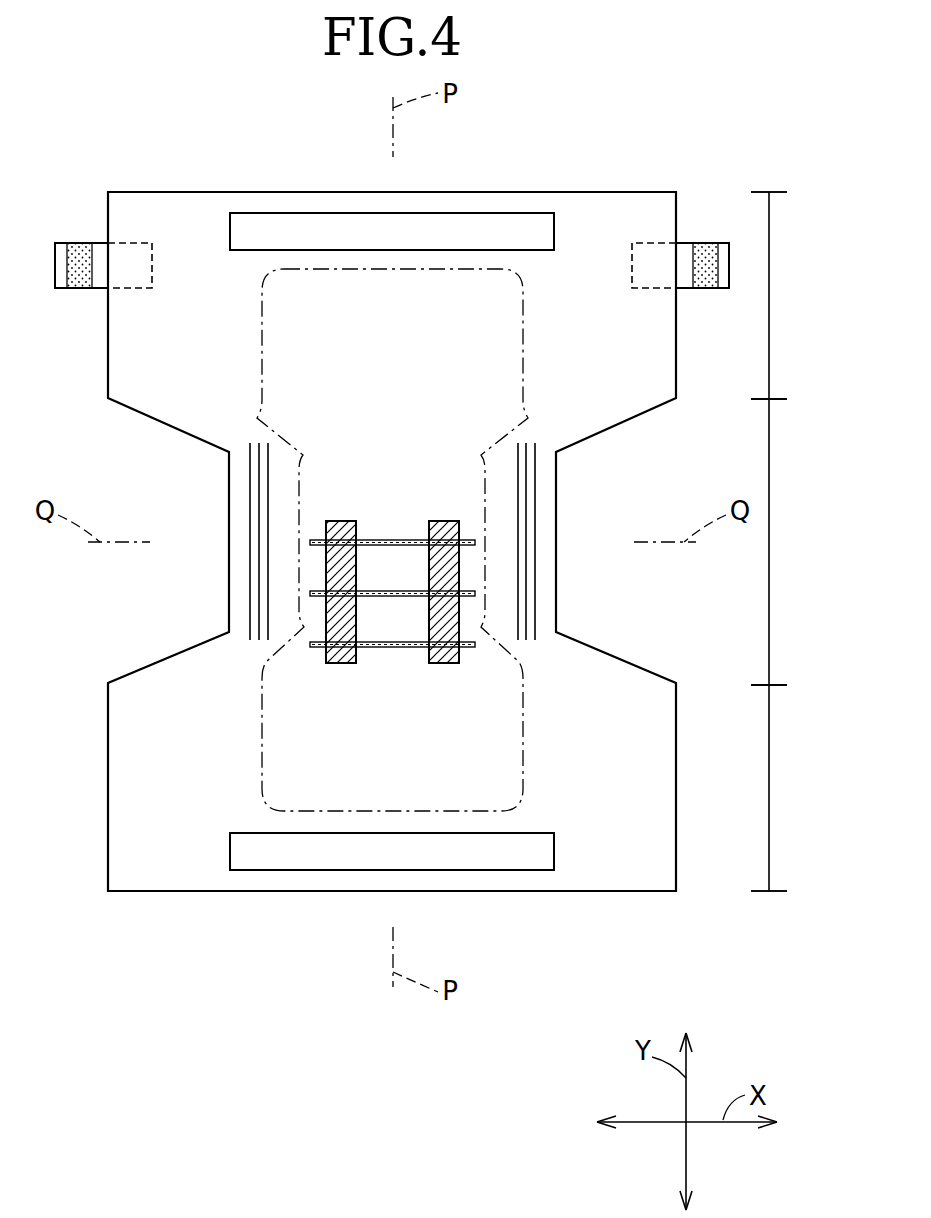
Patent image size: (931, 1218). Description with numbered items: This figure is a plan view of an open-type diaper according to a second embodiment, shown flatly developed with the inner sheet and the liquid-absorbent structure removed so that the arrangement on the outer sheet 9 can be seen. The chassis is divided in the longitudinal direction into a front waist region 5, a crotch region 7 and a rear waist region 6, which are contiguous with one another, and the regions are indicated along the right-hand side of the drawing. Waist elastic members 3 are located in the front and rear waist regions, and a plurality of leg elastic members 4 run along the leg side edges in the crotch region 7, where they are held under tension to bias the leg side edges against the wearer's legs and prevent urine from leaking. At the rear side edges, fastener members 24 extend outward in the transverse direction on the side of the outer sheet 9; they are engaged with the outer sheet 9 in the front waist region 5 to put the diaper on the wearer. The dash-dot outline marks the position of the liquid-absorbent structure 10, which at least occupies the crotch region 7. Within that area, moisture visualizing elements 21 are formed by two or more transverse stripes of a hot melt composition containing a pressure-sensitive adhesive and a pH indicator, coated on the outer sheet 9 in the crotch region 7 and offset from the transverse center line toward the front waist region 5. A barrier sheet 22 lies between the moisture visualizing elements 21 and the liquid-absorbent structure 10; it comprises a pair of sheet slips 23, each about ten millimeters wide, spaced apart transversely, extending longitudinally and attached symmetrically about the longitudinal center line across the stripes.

The waist elastic member 3 is at (432, 222).
The outer sheet 9 is at (472, 263).
The liquid-absorbent structure 10 is at (523, 353).
The fastener member 24 is at (100, 256).
The leg elastic member 4 is at (260, 503).
The moisture visualizing element 21 is at (402, 642).
The barrier sheet 22 is at (392, 623).
The sheet slip 23 is at (340, 663).
The rear waist region 6 is at (769, 292).
The crotch region 7 is at (769, 551).
The front waist region 5 is at (769, 794).